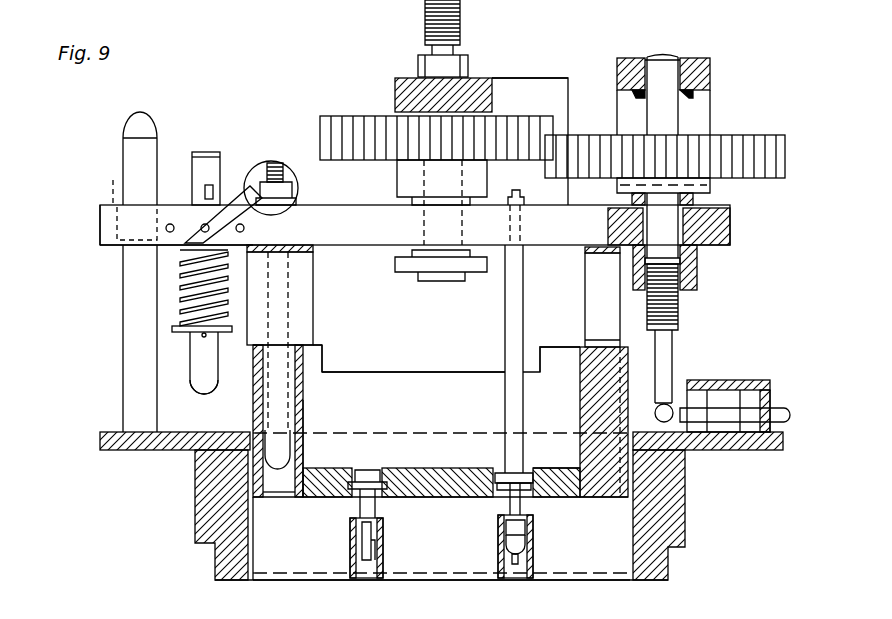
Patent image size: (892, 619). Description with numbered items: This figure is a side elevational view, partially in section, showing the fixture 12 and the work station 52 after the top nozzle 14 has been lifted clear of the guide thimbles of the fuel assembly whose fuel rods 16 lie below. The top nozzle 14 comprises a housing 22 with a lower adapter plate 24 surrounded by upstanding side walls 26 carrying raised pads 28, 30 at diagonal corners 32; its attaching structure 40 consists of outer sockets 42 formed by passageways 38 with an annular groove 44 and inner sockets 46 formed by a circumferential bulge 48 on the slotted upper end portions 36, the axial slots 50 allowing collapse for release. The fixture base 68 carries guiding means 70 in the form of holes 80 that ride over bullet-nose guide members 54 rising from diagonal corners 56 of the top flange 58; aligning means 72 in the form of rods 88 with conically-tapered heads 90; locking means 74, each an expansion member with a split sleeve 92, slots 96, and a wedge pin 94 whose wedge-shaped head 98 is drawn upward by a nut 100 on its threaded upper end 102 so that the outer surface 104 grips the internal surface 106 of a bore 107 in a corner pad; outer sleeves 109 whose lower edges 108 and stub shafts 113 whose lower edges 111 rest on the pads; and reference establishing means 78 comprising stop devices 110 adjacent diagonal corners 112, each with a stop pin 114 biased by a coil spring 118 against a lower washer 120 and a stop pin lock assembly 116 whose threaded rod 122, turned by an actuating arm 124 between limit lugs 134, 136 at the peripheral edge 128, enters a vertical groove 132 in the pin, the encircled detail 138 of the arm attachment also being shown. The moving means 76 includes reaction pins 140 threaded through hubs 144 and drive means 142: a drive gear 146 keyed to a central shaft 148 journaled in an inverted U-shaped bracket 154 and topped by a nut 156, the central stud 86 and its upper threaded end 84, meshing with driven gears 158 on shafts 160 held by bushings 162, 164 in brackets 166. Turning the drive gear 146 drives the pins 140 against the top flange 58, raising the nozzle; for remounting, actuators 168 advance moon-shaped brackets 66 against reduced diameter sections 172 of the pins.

The fixture 12 is at (180, 113).
The top nozzle 14 is at (369, 370).
The fuel rods 16 is at (316, 575).
The housing 22 is at (553, 345).
The adapter plate 24 is at (477, 476).
The side walls 26 is at (486, 371).
The pads 28 is at (323, 368).
The pads 30 is at (642, 344).
The diagonal corners 32 is at (258, 375).
The upper end portions 36 is at (384, 568).
The passageways 38 is at (356, 479).
The attaching structure 40 is at (384, 464).
The outer sockets 42 is at (352, 465).
The annular groove 44 is at (360, 489).
The inner sockets 46 is at (421, 529).
The circumferential bulge 48 is at (352, 527).
The axial slots 50 is at (368, 557).
The work station 52 is at (737, 512).
The guide members 54 is at (122, 303).
The diagonal corners 56 is at (100, 436).
The top flange 58 is at (751, 451).
The moon-shaped brackets 66 is at (694, 388).
The base 68 is at (100, 233).
The guiding means 70 is at (97, 248).
The aligning means 72 is at (502, 284).
The locking means 74 is at (250, 403).
The moving means 76 is at (560, 51).
The reference establishing means 78 is at (182, 380).
The holes 80 is at (113, 190).
The upper threaded end 84 is at (460, 32).
The central stud 86 is at (432, 54).
The rods 88 is at (523, 283).
The conically-tapered heads 90 is at (503, 543).
The split sleeve 92 is at (305, 377).
The wedge pin 94 is at (283, 279).
The slots 96 is at (260, 393).
The wedge-shaped head 98 is at (303, 437).
The nut 100 is at (299, 188).
The threaded upper end 102 is at (291, 168).
The outer surface 104 is at (303, 407).
The internal surface 106 is at (268, 493).
The bore 107 is at (268, 512).
The lower edges 108 is at (313, 345).
The outer sleeves 109 is at (313, 296).
The stop devices 110 is at (235, 188).
The lower edges 111 is at (600, 343).
The diagonal corners 112 is at (100, 210).
The stub shafts 113 is at (585, 290).
The stop pin 114 is at (190, 374).
The stop pin lock assembly 116 is at (192, 218).
The coil spring 118 is at (180, 305).
The lower washer 120 is at (172, 330).
The threaded rod 122 is at (178, 258).
The actuating arm 124 is at (223, 172).
The peripheral edge 128 is at (389, 205).
The vertical groove 132 is at (205, 185).
The left hand limit lug 134 is at (166, 228).
The right hand limit lug 136 is at (245, 229).
The pivot ring 138 is at (261, 166).
The reaction pins 140 is at (679, 342).
The drive means 142 is at (509, 94).
The internally threaded hub 144 is at (699, 283).
The drive gear 146 is at (352, 115).
The central shaft 148 is at (430, 283).
The inverted U-shaped bracket 154 is at (495, 78).
The nut 156 is at (418, 64).
The driven gears 158 is at (766, 134).
The shaft 160 is at (663, 56).
The bushing 162 is at (688, 58).
The bushing 164 is at (716, 208).
The inverted U-shaped bracket 166 is at (706, 66).
The actuators 168 is at (779, 404).
The reduced diameter sections 172 is at (675, 400).